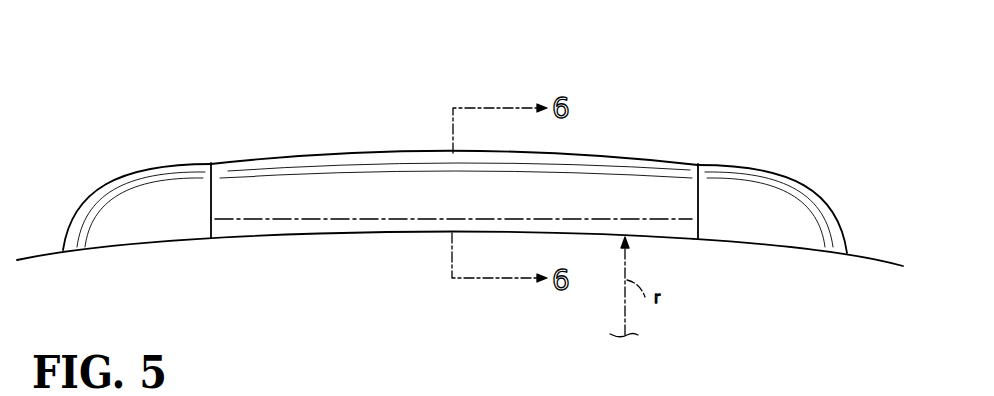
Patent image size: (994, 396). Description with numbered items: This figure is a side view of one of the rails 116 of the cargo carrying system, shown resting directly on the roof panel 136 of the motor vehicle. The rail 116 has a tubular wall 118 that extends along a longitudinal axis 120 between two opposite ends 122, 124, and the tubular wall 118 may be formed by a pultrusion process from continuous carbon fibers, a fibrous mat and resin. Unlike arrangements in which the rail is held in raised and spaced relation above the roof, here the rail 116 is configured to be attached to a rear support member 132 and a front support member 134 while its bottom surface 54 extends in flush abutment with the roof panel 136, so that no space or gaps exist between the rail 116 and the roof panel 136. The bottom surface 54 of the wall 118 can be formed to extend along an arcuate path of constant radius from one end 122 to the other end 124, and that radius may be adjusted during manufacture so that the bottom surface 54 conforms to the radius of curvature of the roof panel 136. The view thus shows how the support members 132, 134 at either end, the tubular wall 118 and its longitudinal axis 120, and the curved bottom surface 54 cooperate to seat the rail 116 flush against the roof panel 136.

The bottom surface 54 is at (303, 235).
The rail 116 is at (262, 158).
The tubular wall 118 is at (348, 162).
The longitudinal axis 120 is at (630, 220).
The end 122 is at (210, 185).
The end 124 is at (700, 188).
The rear support member 132 is at (127, 174).
The front support member 134 is at (805, 185).
The roof panel 136 is at (878, 260).